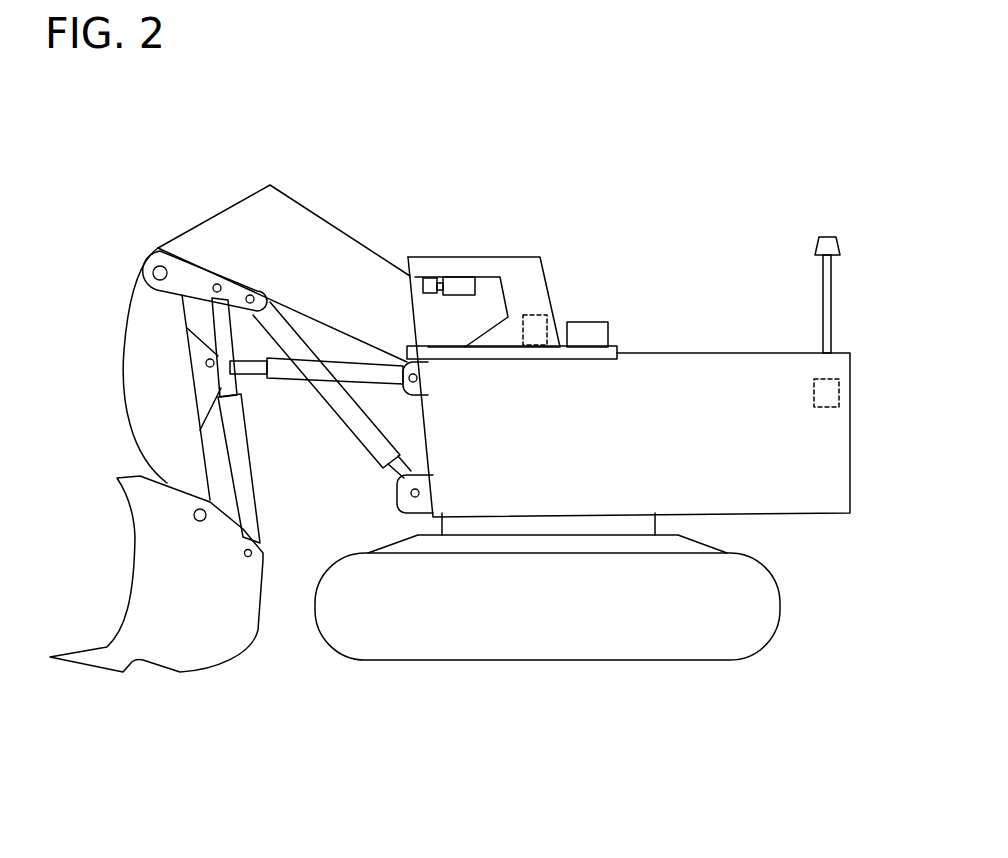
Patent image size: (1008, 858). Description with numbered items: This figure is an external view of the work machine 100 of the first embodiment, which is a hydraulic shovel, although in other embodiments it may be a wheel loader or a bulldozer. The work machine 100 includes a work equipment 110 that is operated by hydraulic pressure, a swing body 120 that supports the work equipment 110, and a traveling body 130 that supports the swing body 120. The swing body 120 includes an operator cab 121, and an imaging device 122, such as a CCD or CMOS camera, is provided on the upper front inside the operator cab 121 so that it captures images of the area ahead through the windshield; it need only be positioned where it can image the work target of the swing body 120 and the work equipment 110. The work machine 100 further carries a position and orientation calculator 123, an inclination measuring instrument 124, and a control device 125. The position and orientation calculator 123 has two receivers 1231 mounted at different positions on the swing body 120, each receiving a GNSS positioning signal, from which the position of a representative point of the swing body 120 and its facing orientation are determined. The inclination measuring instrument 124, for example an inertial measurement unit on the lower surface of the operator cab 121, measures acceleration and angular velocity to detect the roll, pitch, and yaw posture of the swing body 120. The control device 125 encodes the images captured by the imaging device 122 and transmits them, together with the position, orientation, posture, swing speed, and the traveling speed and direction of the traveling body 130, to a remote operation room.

The work machine 100 is at (738, 155).
The work equipment 110 is at (368, 208).
The swing body 120 is at (723, 352).
The operator cab 121 is at (532, 256).
The imaging device 122 is at (460, 276).
The position and orientation calculator 123 is at (829, 378).
The receiver 1231 is at (828, 236).
The inclination measuring instrument 124 is at (590, 336).
The control device 125 is at (537, 314).
The traveling body 130 is at (552, 662).